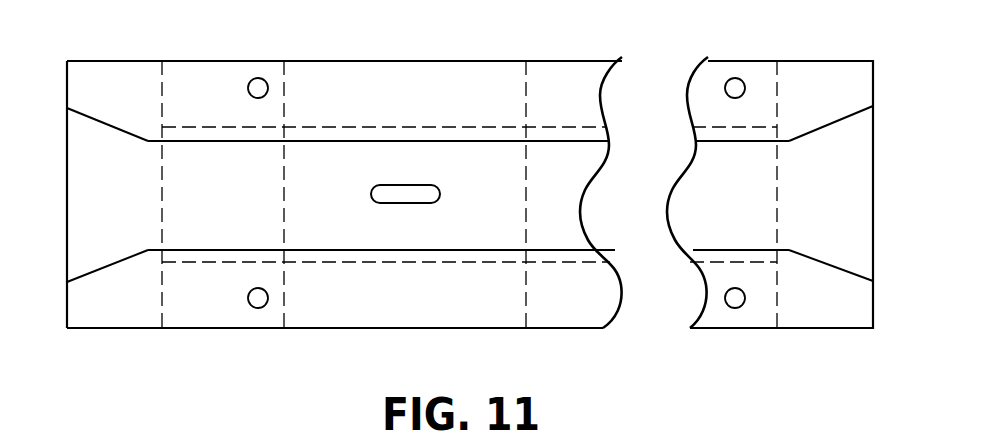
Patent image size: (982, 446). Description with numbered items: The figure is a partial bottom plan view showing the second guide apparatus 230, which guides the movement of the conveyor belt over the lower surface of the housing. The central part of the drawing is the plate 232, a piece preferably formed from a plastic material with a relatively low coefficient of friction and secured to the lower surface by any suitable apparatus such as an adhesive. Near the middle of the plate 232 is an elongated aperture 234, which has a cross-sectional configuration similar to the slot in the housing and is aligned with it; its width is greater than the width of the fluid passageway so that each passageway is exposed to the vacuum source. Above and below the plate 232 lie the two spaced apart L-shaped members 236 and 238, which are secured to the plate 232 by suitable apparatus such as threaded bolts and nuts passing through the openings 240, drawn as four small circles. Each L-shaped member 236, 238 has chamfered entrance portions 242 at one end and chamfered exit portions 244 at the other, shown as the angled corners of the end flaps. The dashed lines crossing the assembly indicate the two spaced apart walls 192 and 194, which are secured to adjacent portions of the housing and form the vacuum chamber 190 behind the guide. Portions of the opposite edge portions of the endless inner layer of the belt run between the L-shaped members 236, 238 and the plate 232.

The vacuum chamber 190 is at (347, 330).
The wall 192 is at (287, 107).
The wall 194 is at (532, 107).
The second guide apparatus 230 is at (186, 348).
The plate 232 is at (444, 195).
The aperture 234 is at (388, 190).
The L-shaped member 236 is at (344, 303).
The L-shaped member 238 is at (344, 83).
The openings 240 is at (257, 87).
The chamfered entrance portions 242 is at (107, 194).
The chamfered exit portions 244 is at (831, 192).